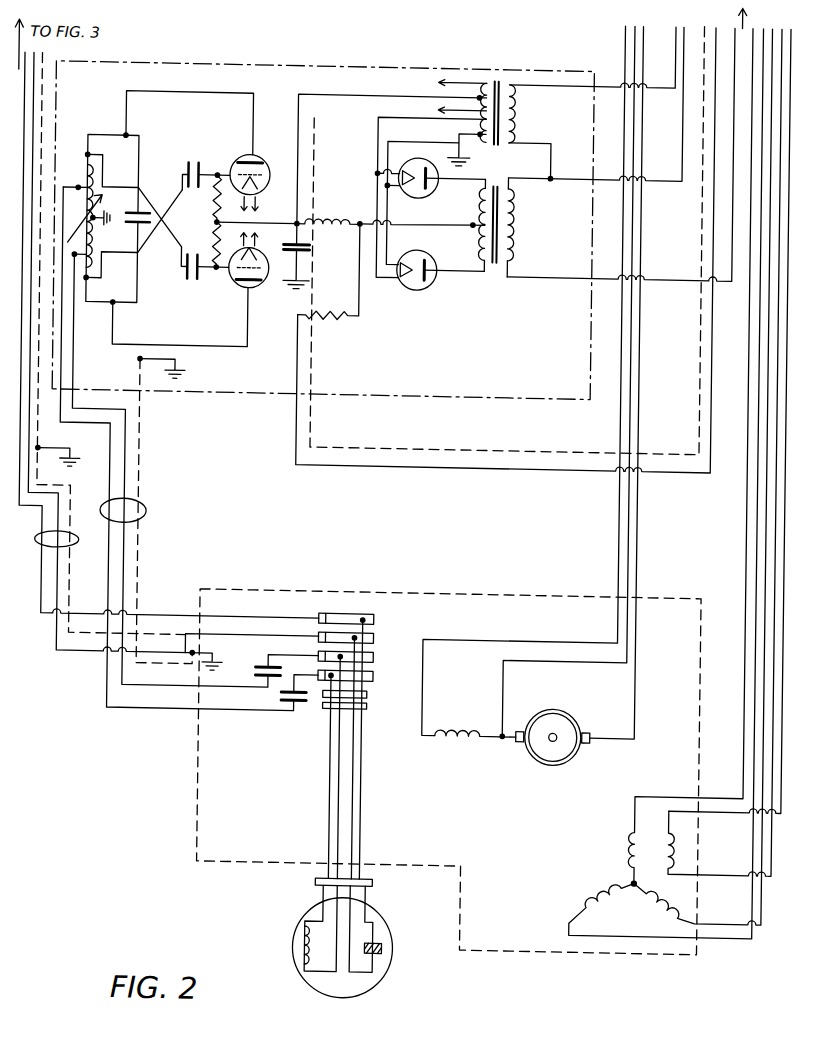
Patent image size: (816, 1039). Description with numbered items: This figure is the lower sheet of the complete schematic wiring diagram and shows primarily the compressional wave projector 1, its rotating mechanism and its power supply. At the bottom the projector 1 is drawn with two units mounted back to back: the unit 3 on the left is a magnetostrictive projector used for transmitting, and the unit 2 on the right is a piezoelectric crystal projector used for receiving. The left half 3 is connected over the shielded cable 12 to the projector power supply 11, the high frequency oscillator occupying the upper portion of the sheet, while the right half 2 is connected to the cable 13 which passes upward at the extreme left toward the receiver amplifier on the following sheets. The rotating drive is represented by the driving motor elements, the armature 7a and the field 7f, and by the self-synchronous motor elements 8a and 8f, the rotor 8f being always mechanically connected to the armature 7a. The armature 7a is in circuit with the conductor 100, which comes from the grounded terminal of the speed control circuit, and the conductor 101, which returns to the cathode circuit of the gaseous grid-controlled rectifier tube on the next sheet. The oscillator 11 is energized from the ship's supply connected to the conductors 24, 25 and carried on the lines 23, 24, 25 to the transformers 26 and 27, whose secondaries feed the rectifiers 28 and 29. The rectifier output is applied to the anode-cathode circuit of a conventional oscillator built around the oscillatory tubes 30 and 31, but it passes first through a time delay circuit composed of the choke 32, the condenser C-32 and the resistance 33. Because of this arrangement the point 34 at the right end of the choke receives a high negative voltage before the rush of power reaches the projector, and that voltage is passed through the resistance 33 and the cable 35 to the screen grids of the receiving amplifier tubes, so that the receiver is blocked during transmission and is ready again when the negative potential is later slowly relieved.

The compressional wave projector 1 is at (393, 974).
The piezoelectric crystal projector unit 2 is at (385, 948).
The magnetostrictive projector unit 3 is at (312, 948).
The motor armature 7a is at (540, 762).
The motor field 7f is at (454, 738).
The self-synchronous motor armature 8a is at (645, 900).
The self-synchronous motor rotor 8f is at (665, 825).
The projector power supply 11 is at (256, 382).
The shielded cable 12 is at (147, 513).
The cable 13 is at (48, 547).
The line 23 is at (728, 71).
The conductor 24 is at (678, 95).
The conductor 25 is at (670, 67).
The transformer 26 is at (491, 265).
The transformer 27 is at (491, 81).
The rectifier 28 is at (430, 287).
The rectifier 29 is at (428, 194).
The oscillatory tube 30 is at (247, 291).
The oscillatory tube 31 is at (250, 158).
The choke 32 is at (319, 210).
The condenser C-32 is at (304, 252).
The resistance 33 is at (325, 320).
The point 34 is at (358, 221).
The cable 35 is at (352, 470).
The conductor 100 is at (637, 34).
The conductor 101 is at (628, 55).